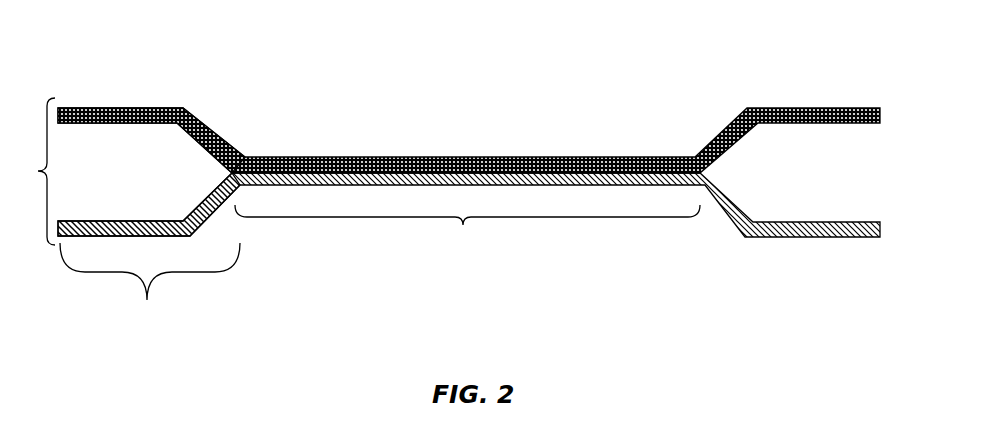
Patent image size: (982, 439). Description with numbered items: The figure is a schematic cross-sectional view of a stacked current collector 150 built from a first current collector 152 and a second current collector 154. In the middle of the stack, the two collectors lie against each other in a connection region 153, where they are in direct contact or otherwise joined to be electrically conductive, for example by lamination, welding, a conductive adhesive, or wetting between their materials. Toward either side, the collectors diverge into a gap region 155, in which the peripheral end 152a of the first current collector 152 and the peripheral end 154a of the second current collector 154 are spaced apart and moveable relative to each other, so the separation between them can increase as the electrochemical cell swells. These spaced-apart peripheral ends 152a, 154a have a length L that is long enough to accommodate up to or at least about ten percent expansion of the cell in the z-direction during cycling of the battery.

The stacked current collector 150 is at (278, 72).
The first current collector 152 is at (787, 110).
The peripheral end of the first current collector 152a is at (132, 107).
The connection region 153 is at (467, 228).
The second current collector 154 is at (813, 222).
The peripheral end of the second current collector 154a is at (150, 218).
The gap region 155 is at (29, 171).
The length L is at (150, 285).